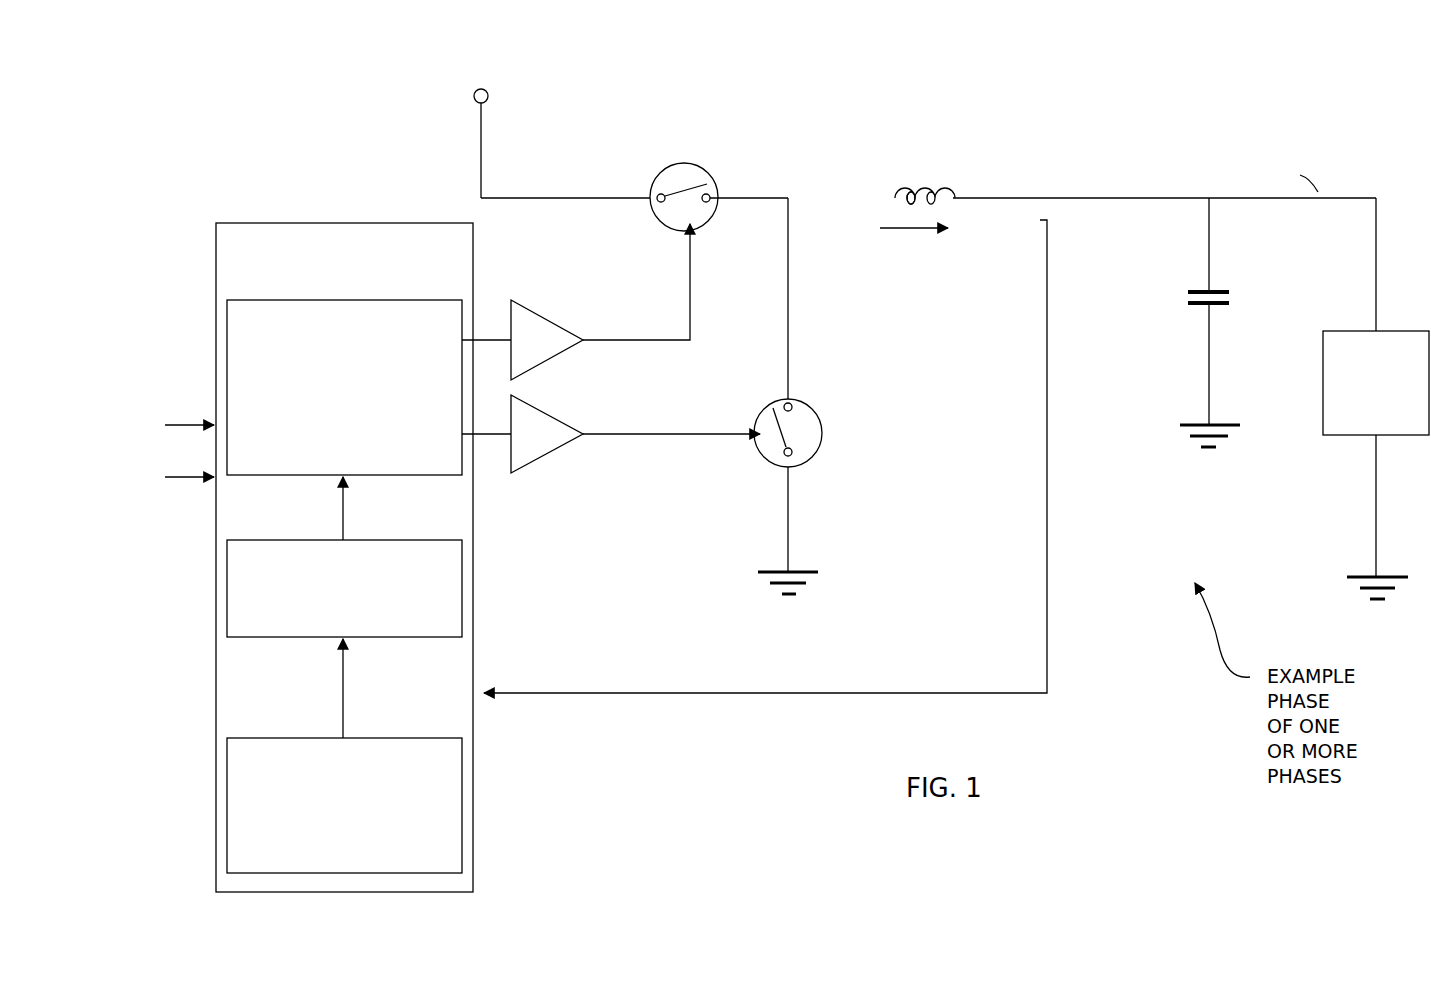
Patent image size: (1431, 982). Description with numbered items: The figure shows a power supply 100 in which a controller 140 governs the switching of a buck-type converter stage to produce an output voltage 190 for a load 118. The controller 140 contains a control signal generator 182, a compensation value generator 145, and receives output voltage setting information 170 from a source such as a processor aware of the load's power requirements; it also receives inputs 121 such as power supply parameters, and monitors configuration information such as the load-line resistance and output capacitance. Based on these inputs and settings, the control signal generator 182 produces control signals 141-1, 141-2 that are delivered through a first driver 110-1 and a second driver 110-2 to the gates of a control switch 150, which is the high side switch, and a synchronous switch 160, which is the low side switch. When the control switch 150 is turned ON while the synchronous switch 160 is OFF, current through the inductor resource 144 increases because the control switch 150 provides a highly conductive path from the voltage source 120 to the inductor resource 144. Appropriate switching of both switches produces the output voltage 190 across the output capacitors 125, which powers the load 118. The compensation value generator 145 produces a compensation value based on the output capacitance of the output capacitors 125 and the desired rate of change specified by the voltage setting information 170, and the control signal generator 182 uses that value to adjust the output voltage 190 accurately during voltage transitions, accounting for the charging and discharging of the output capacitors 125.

The power supply 100 is at (883, 36).
The voltage source 120 is at (428, 113).
The controller 140 is at (328, 275).
The control signal generator 182 is at (328, 421).
The compensation value generator 145 is at (328, 621).
The output voltage setting information 170 is at (328, 851).
The driver 110-1 is at (548, 300).
The driver 110-2 is at (547, 465).
The control signal 141-1 is at (670, 349).
The control signal 141-2 is at (670, 453).
The control switch 150 is at (686, 162).
The synchronous switch 160 is at (826, 432).
The inductor resource 144 is at (925, 178).
The output voltage 190 is at (1080, 198).
The output capacitors 125 is at (1182, 296).
The load 118 is at (1360, 406).
The inputs 121 is at (640, 702).